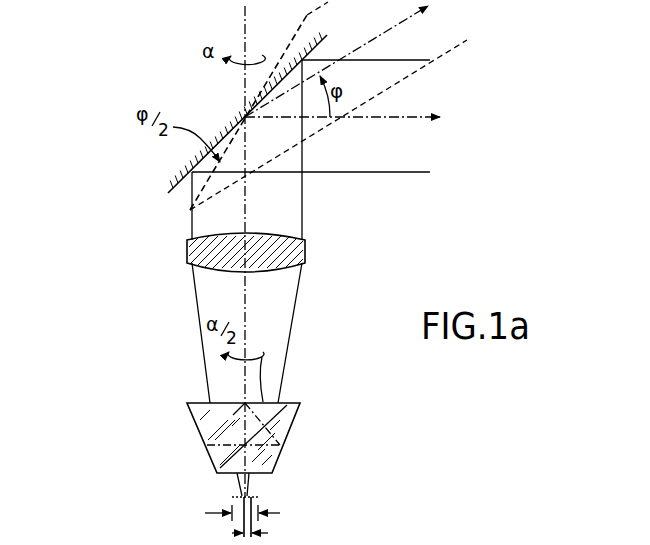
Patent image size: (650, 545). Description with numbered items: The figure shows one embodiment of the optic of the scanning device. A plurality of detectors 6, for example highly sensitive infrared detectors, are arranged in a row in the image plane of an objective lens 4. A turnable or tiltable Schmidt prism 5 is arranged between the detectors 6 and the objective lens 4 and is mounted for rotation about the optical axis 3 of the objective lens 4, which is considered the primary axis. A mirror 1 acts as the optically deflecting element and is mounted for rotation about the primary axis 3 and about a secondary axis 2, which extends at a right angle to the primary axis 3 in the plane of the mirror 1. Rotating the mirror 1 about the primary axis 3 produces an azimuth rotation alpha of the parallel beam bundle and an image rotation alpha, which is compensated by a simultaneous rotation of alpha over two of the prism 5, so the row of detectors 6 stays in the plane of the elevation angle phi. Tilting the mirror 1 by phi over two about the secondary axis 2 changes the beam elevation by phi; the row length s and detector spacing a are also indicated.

The mirror 1 is at (176, 175).
The secondary axis 2 is at (240, 111).
The optical axis 3 is at (241, 22).
The objective lens 4 is at (305, 249).
The Schmidt prism 5 is at (285, 422).
The detectors 6 is at (266, 494).